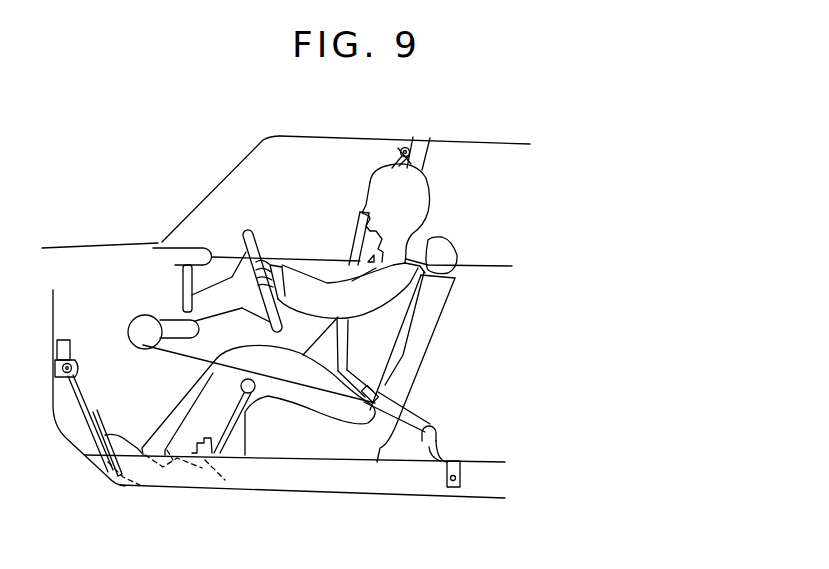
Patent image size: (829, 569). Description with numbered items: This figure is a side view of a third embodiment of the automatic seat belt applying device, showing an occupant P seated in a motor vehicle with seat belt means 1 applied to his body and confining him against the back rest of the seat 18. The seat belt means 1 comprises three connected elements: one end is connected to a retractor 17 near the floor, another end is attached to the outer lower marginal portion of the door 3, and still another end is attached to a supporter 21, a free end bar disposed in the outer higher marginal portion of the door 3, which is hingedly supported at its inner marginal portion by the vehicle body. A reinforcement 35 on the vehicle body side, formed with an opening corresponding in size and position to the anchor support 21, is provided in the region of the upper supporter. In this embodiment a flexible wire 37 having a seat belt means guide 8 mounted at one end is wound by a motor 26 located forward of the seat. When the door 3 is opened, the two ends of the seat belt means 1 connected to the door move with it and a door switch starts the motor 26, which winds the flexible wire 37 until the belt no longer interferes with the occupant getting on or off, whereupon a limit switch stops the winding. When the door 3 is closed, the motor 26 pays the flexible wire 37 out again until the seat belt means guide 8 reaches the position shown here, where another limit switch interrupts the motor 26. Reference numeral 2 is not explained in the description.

The seat belt means 1 is at (362, 240).
The vehicle floor 2 is at (378, 483).
The door 3 is at (309, 259).
The seat belt means guide 8 is at (381, 393).
The retractor 17 is at (437, 438).
The seat 18 is at (427, 318).
The supporter 21 is at (411, 146).
The motor 26 is at (142, 343).
The reinforcement 35 is at (398, 147).
The flexible wire 37 is at (189, 357).
The occupant P is at (405, 263).